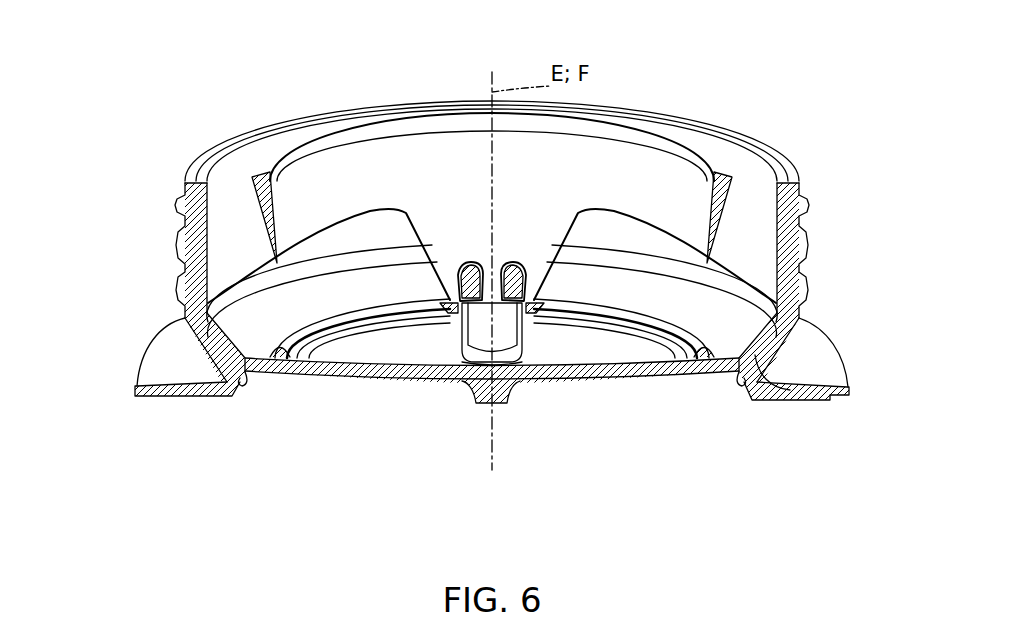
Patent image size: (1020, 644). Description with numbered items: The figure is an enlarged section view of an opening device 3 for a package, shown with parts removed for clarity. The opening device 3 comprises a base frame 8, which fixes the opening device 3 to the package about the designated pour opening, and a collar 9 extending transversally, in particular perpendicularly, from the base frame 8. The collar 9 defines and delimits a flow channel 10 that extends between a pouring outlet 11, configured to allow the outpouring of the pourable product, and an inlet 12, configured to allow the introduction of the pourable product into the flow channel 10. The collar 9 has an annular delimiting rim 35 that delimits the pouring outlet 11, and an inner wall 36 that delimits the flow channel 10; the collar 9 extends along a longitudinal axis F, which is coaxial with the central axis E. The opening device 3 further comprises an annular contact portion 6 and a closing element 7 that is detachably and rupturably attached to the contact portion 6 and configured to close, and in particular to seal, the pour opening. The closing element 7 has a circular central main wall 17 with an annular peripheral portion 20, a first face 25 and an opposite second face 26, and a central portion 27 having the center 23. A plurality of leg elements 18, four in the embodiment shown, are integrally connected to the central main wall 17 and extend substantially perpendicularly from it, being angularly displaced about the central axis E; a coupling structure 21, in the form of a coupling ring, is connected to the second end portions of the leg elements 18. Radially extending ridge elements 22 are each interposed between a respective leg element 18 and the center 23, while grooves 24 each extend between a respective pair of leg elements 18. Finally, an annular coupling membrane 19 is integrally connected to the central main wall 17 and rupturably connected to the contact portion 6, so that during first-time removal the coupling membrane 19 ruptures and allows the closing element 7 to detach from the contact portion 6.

The opening device 3 is at (760, 99).
The contact portion 6 is at (243, 352).
The closing element 7 is at (585, 406).
The base frame 8 is at (814, 337).
The collar 9 is at (160, 181).
The flow channel 10 is at (241, 177).
The pouring outlet 11 is at (754, 150).
The inlet 12 is at (236, 394).
The central main wall 17 is at (593, 324).
The leg elements 18 is at (498, 253).
The coupling membrane 19 is at (243, 374).
The peripheral portion 20 is at (286, 322).
The coupling structure 21 is at (628, 135).
The ridge elements 22 is at (504, 322).
The center 23 is at (479, 366).
The grooves 24 is at (312, 341).
The first face 25 is at (380, 332).
The second face 26 is at (320, 380).
The central portion 27 is at (462, 362).
The delimiting rim 35 is at (212, 156).
The inner wall 36 is at (234, 213).